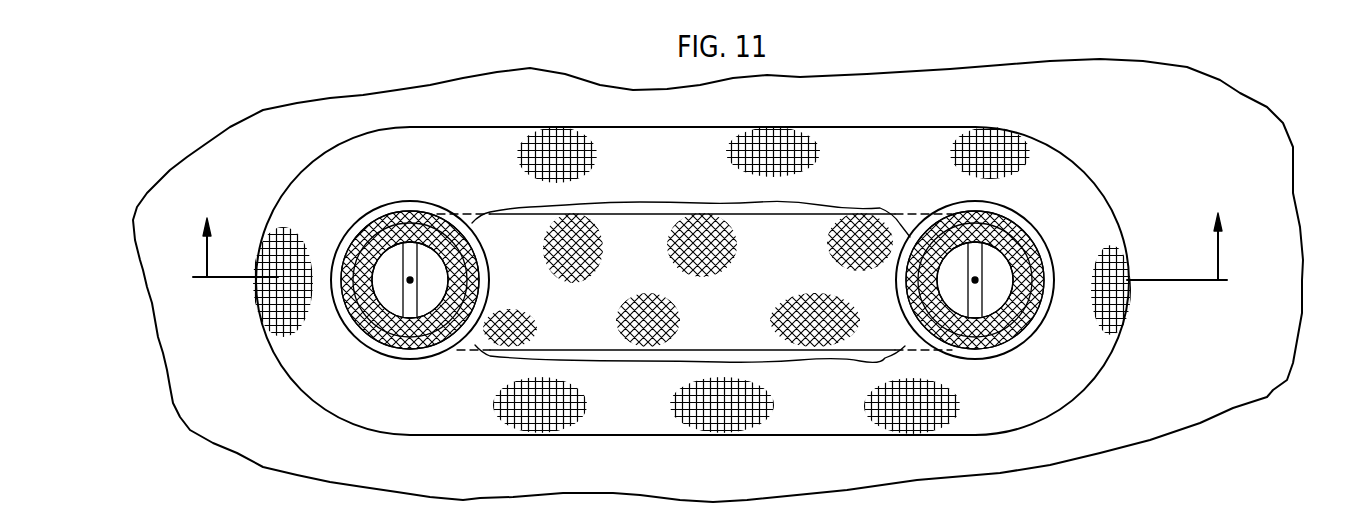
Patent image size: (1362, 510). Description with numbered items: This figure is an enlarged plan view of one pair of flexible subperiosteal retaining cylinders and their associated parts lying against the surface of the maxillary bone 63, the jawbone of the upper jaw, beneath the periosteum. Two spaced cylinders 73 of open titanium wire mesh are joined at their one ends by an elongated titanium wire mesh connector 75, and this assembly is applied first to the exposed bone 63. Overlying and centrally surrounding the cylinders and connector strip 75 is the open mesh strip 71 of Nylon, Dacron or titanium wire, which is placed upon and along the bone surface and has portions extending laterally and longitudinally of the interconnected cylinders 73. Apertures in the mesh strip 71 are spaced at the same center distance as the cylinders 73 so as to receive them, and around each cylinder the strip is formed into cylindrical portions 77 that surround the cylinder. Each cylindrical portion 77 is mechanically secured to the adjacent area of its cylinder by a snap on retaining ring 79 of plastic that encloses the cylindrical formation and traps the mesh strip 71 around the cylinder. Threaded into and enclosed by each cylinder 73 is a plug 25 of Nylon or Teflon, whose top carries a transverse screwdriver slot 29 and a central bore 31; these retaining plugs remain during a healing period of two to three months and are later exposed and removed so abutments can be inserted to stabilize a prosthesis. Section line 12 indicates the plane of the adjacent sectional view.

The maxillary bone 63 is at (1288, 228).
The open mesh strip 71 is at (727, 130).
The wire mesh connector 75 is at (843, 230).
The cylindrical portions 77 is at (440, 330).
The cylinders 73 is at (385, 220).
The snap on retaining ring 79 is at (400, 355).
The screwdriver slot 29 is at (385, 322).
The plug 25 is at (427, 268).
The central bore 31 is at (408, 280).
The section line 12- 12 is at (714, 273).